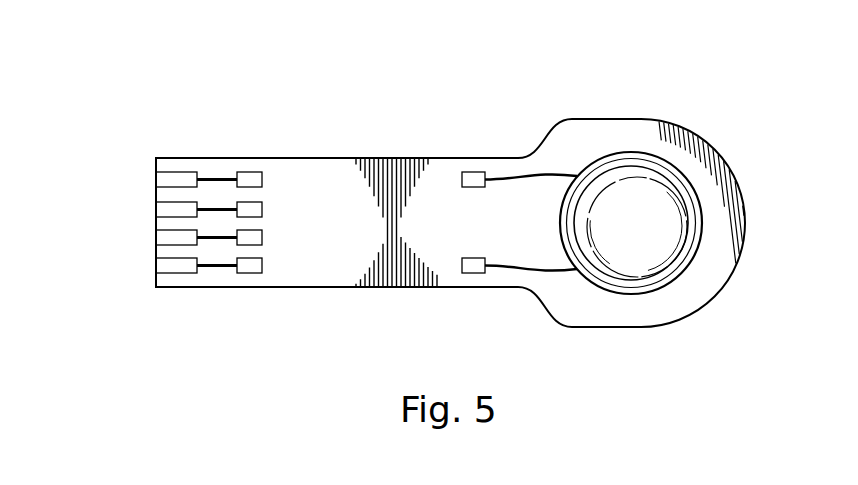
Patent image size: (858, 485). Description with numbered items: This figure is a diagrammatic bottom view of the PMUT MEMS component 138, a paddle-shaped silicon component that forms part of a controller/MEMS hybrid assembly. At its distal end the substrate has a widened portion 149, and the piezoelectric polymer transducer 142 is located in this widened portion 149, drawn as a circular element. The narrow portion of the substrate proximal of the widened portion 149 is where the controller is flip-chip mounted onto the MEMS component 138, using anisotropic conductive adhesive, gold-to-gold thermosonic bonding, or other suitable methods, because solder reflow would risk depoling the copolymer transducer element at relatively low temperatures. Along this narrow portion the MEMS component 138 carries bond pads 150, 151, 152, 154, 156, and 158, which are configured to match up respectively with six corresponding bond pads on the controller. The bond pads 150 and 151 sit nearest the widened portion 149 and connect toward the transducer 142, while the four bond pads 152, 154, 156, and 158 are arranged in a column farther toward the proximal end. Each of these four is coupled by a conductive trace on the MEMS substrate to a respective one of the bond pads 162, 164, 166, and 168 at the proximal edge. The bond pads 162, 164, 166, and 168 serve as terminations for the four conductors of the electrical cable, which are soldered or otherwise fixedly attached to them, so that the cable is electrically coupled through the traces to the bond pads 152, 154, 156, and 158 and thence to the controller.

The PMUT MEMS component 138 is at (327, 92).
The piezoelectric polymer transducer 142 is at (668, 263).
The widened portion 149 is at (725, 158).
The bond pad 150 is at (473, 170).
The bond pad 151 is at (471, 273).
The bond pad 152 is at (250, 170).
The bond pad 154 is at (263, 208).
The bond pad 156 is at (263, 237).
The bond pad 158 is at (249, 273).
The bond pad 162 is at (165, 180).
The bond pad 164 is at (165, 208).
The bond pad 166 is at (165, 237).
The bond pad 168 is at (165, 265).